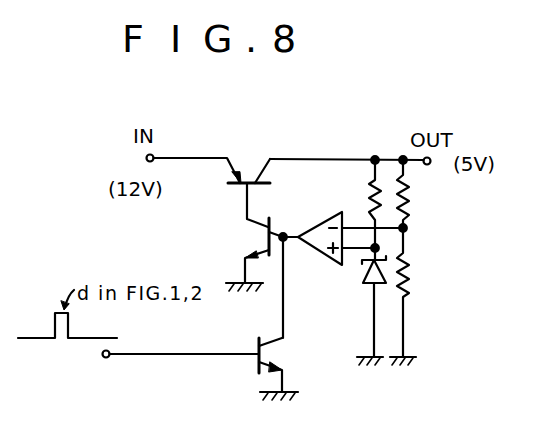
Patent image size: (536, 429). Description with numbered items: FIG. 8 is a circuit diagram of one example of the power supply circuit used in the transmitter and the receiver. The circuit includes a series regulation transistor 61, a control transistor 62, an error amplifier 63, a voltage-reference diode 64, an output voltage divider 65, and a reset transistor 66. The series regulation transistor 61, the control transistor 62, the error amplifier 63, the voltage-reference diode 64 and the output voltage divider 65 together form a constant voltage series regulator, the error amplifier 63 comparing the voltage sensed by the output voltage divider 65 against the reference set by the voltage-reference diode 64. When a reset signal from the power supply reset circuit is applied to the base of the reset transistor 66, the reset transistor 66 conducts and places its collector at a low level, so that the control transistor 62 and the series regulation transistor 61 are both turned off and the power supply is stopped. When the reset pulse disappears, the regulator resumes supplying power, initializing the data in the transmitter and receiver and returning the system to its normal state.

The series regulation transistor 61 is at (259, 168).
The control transistor 62 is at (262, 236).
The error amplifier 63 is at (311, 229).
The voltage-reference diode 64 is at (359, 277).
The output voltage divider 65 is at (406, 216).
The reset transistor 66 is at (272, 357).